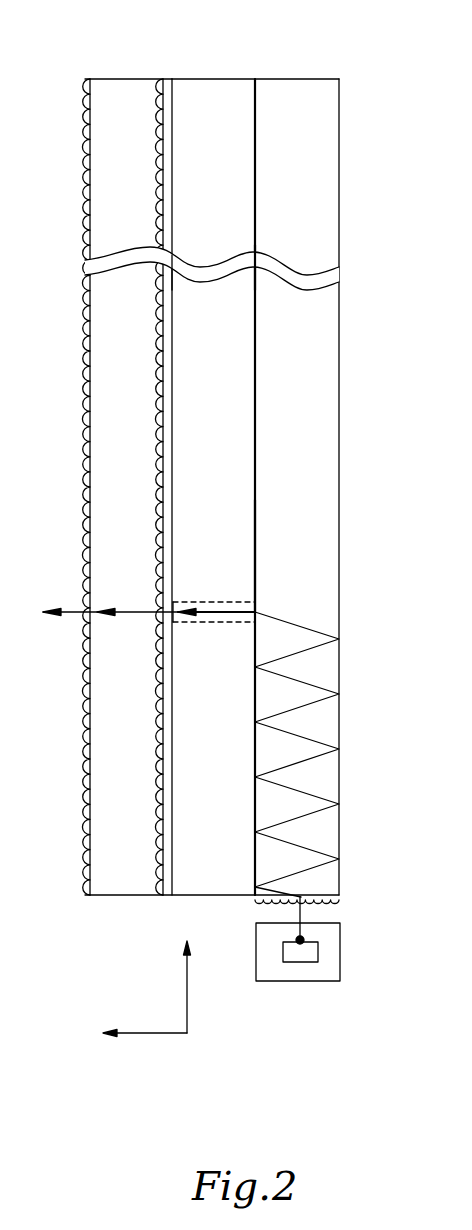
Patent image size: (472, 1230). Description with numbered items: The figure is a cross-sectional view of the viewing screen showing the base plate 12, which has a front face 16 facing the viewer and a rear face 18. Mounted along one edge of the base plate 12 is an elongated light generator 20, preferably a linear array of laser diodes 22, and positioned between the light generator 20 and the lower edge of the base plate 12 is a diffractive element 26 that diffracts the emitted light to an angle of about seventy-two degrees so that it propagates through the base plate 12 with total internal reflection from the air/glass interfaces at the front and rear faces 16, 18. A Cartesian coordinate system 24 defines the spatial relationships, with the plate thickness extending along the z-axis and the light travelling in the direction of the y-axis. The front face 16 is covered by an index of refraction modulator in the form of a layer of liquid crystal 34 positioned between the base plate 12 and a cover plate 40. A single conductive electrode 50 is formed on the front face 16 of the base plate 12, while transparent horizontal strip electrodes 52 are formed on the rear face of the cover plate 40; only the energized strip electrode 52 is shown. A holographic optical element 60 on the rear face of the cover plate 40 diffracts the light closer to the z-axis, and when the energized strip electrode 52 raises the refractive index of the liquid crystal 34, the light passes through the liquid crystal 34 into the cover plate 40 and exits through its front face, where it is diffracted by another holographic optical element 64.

The base plate 12 is at (300, 229).
The front face 16 is at (255, 568).
The rear face 18 is at (339, 463).
The light generator 20 is at (340, 940).
The laser diodes 22 is at (300, 958).
The Cartesian coordinate system 24 is at (188, 1034).
The diffractive element 26 is at (340, 903).
The liquid crystal 34 is at (224, 209).
The cover plate 40 is at (137, 222).
The single conductive electrode 50 is at (256, 130).
The strip electrodes 52 is at (158, 618).
The holographic optical element 60 is at (152, 120).
The holographic optical element 64 is at (83, 118).